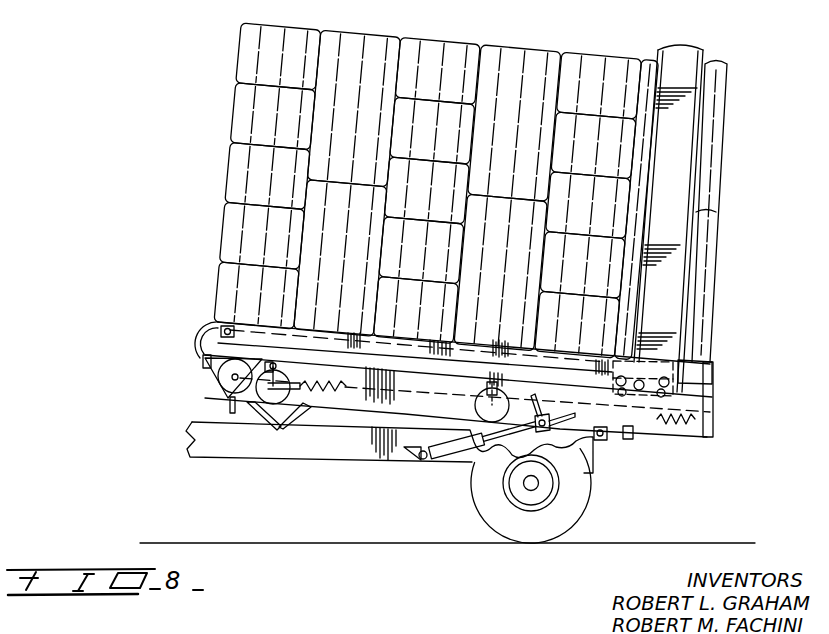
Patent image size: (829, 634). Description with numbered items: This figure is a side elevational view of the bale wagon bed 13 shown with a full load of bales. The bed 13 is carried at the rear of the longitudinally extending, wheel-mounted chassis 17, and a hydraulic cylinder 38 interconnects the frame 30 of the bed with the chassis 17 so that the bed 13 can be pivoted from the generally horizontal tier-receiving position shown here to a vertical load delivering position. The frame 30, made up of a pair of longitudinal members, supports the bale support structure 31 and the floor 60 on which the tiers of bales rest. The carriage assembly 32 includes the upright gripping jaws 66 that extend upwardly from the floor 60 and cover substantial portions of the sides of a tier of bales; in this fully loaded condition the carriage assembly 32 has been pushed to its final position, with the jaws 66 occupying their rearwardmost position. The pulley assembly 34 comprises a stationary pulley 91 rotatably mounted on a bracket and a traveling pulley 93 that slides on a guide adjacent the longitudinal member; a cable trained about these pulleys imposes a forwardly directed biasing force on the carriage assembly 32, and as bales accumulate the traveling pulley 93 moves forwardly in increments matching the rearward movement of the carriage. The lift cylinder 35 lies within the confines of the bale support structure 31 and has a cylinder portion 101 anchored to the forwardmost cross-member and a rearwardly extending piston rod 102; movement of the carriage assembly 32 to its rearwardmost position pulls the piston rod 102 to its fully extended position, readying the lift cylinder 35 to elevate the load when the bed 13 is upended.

The bale wagon bed 13 is at (201, 311).
The chassis 17 is at (351, 448).
The frame 30 is at (684, 412).
The bale support structure 31 is at (201, 338).
The carriage assembly 32 is at (690, 386).
The pulley assembly 34 is at (218, 399).
The lift cylinder 35 is at (458, 339).
The hydraulic cylinder 38 is at (444, 456).
The floor 60 is at (546, 346).
The upright gripping jaw 66 is at (679, 151).
The stationary pulley 91 is at (216, 362).
The traveling pulley 93 is at (275, 404).
The cylinder portion 101 is at (402, 348).
The piston rod 102 is at (606, 360).